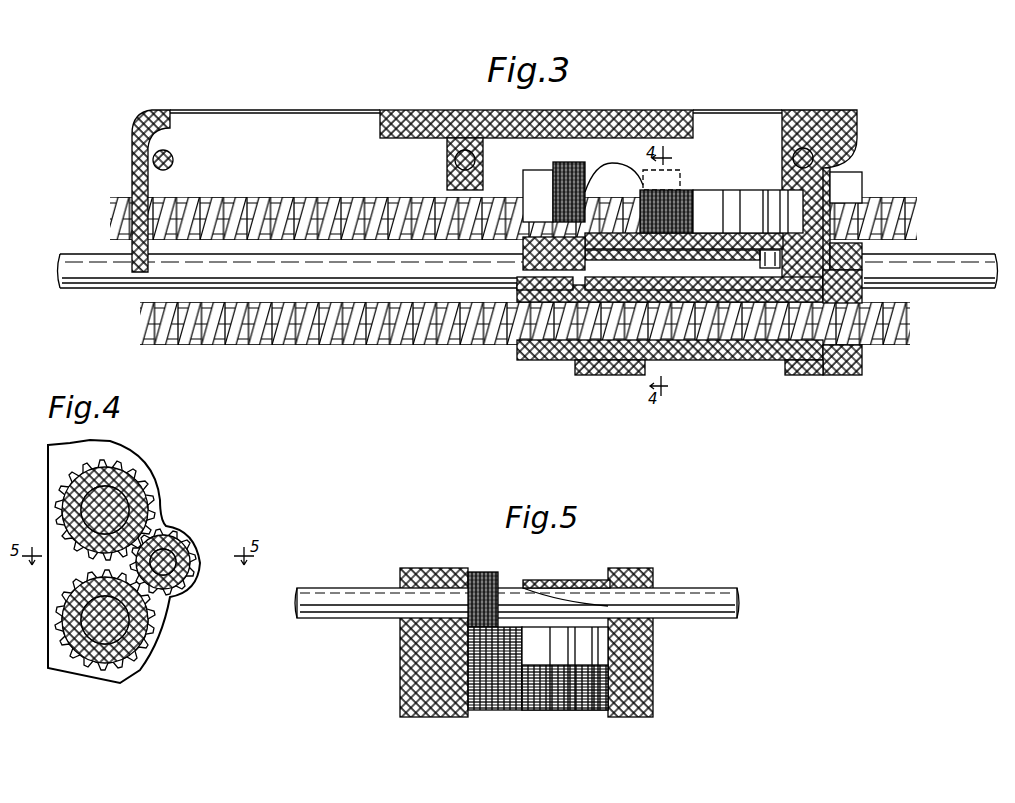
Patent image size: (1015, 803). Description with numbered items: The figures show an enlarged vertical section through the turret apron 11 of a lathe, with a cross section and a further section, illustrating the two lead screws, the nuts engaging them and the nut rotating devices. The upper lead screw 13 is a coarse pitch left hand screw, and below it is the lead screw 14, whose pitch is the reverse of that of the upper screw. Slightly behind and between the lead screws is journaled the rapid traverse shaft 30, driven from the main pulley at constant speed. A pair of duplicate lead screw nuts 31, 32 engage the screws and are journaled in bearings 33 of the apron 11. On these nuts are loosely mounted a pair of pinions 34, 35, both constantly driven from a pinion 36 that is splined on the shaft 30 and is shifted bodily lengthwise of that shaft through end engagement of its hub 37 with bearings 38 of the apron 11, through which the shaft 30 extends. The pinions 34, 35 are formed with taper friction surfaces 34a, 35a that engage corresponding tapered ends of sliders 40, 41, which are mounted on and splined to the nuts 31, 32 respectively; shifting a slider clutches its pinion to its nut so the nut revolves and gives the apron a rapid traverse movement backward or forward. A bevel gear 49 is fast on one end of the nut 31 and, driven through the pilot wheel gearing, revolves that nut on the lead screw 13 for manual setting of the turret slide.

In FIG. 3, the turret apron 11 is at (622, 118).
In FIG. 4, the turret apron 11 is at (52, 584).
In FIG. 3, the lead screw 13 is at (286, 197).
In FIG. 4, the lead screw 13 is at (155, 489).
In FIG. 3, the lead screw 14 is at (298, 345).
In FIG. 4, the lead screw 14 is at (152, 614).
In FIG. 3, the rapid traverse shaft 30 is at (89, 288).
In FIG. 4, the rapid traverse shaft 30 is at (196, 547).
In FIG. 5, the rapid traverse shaft 30 is at (357, 618).
In FIG. 3, the lead screw nut 31 is at (846, 180).
In FIG. 4, the lead screw nut 31 is at (110, 465).
In FIG. 3, the lead screw nut 32 is at (863, 368).
In FIG. 4, the lead screw nut 32 is at (93, 666).
In FIG. 3, the bearings 33 is at (604, 375).
In FIG. 3, the pinion 34 is at (690, 182).
In FIG. 4, the pinion 34 is at (130, 470).
In FIG. 3, the taper friction surface 34a is at (643, 262).
In FIG. 3, the pinion 35 is at (676, 372).
In FIG. 4, the pinion 35 is at (144, 642).
In FIG. 5, the pinion 35 is at (490, 710).
In FIG. 3, the taper friction surface 35a is at (714, 378).
In FIG. 4, the pinion 36 is at (178, 552).
In FIG. 5, the pinion 36 is at (482, 572).
In FIG. 5, the hub 37 is at (535, 582).
In FIG. 5, the bearings 38 is at (418, 570).
In FIG. 3, the slider 40 is at (752, 195).
In FIG. 3, the slider 41 is at (758, 376).
In FIG. 5, the slider 41 is at (578, 710).
In FIG. 3, the bevel gear 49 is at (580, 190).